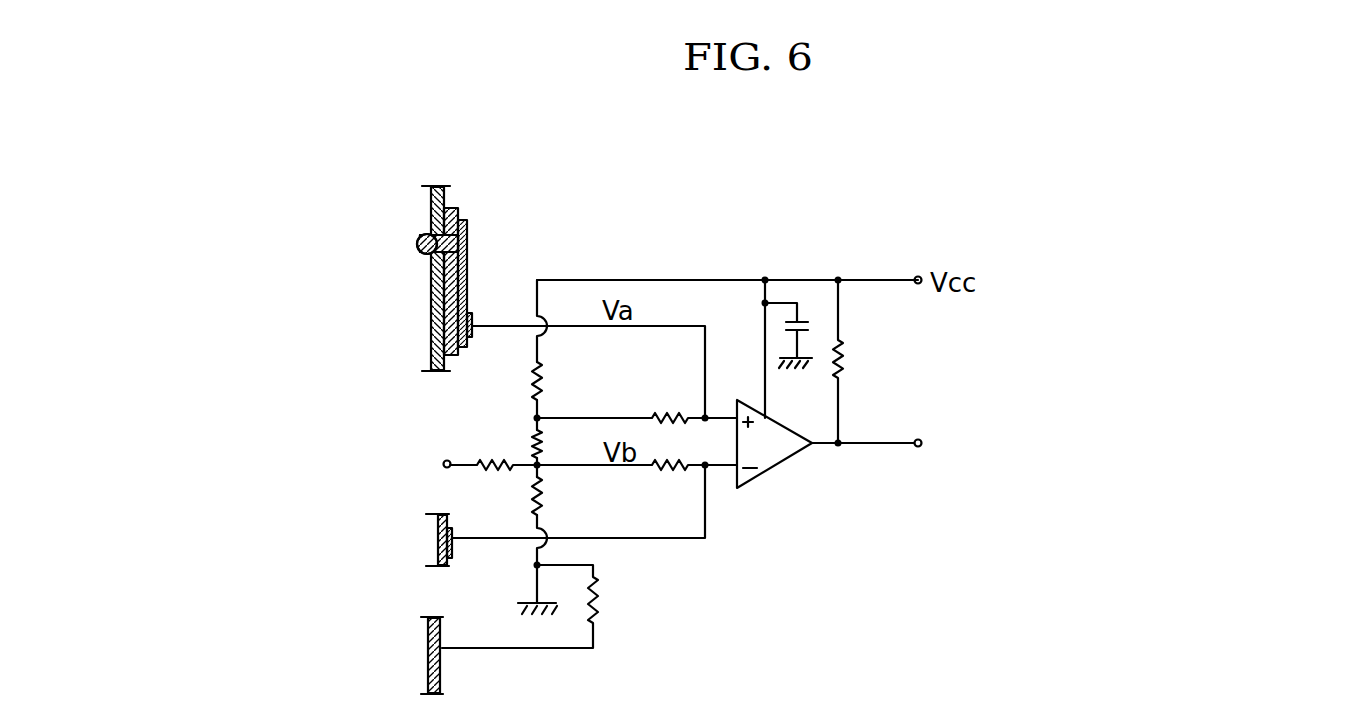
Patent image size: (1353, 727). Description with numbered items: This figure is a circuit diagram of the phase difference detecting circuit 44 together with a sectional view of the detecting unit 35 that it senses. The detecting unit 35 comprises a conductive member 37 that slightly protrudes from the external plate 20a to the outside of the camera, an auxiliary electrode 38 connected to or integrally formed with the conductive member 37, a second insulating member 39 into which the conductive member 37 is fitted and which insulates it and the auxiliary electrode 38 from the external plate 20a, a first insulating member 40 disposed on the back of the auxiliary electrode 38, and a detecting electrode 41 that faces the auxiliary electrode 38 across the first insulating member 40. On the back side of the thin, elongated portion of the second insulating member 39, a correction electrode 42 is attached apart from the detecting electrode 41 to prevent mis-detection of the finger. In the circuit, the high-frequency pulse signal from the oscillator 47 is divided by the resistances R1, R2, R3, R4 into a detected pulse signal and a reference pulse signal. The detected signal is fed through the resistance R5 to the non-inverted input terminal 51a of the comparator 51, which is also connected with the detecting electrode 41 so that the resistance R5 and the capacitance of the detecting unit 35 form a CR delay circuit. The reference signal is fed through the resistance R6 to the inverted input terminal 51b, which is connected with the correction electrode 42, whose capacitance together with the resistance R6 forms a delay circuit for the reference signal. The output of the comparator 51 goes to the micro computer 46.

The detecting unit 35 is at (392, 256).
The conductive member 37 is at (421, 240).
The auxiliary electrode 38 is at (459, 220).
The second insulating member 39 is at (451, 208).
The first insulating member 40 is at (467, 243).
The detecting electrode 41 is at (472, 316).
The correction electrode 42 is at (453, 545).
The phase difference detecting circuit 44 is at (723, 243).
The micro computer 46 is at (937, 443).
The oscillator 47 is at (421, 467).
The comparator 51 is at (778, 470).
The non-inverted input terminal 51a is at (738, 407).
The inverted input terminal 51b is at (738, 480).
The external plate 20a is at (428, 647).
The resistance R1 is at (493, 450).
The resistance R2 is at (557, 382).
The resistance R3 is at (557, 446).
The resistance R4 is at (557, 497).
The resistance R5 is at (621, 404).
The resistance R6 is at (621, 484).